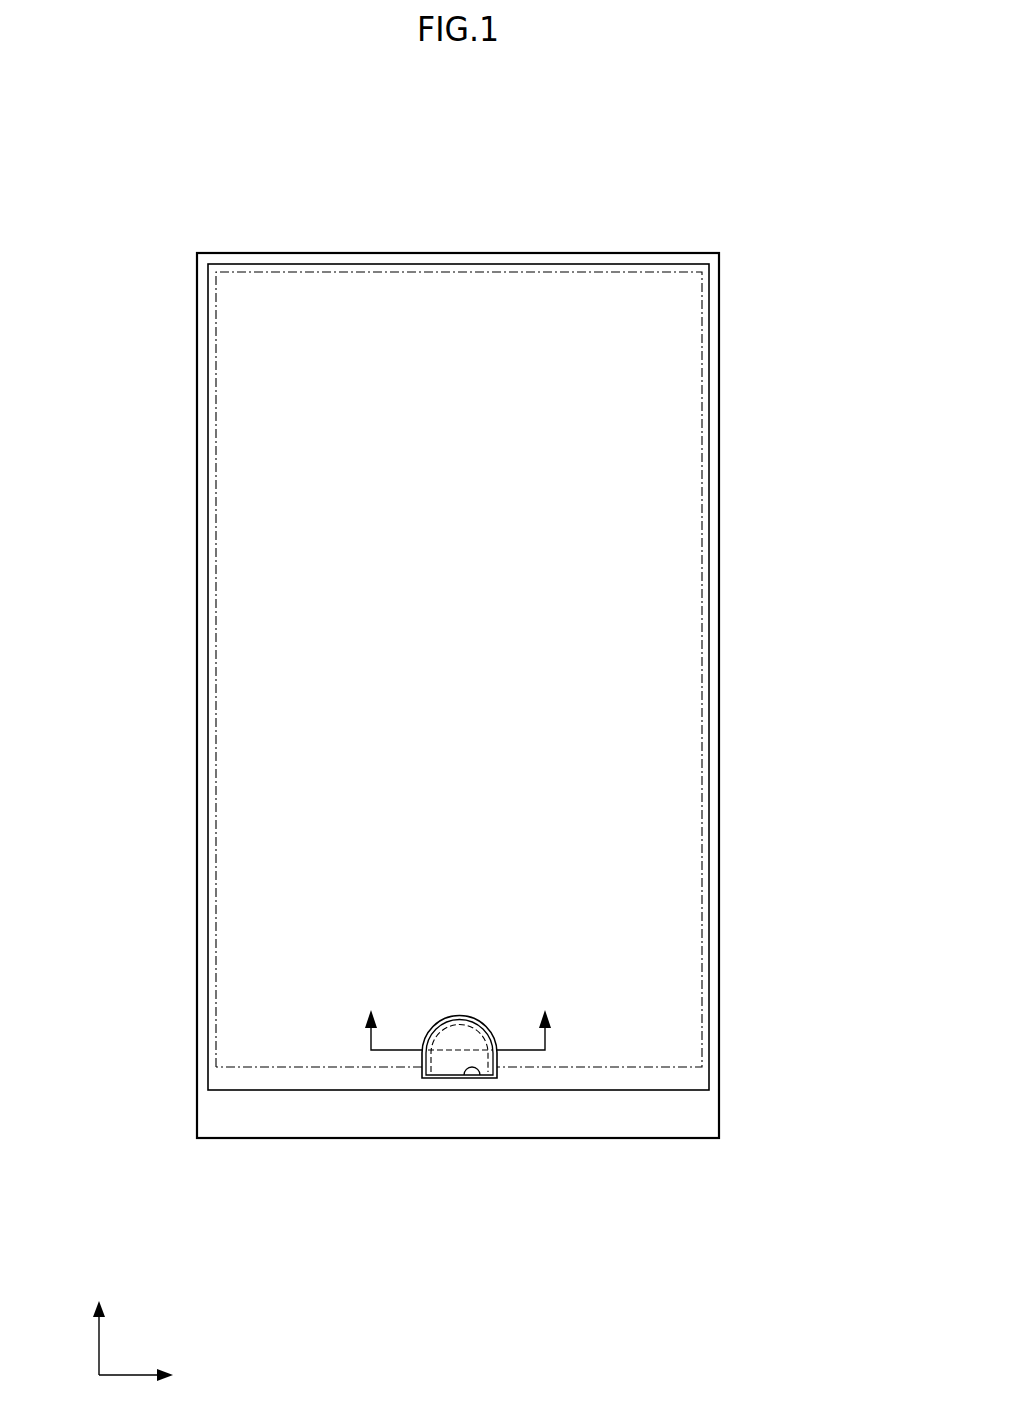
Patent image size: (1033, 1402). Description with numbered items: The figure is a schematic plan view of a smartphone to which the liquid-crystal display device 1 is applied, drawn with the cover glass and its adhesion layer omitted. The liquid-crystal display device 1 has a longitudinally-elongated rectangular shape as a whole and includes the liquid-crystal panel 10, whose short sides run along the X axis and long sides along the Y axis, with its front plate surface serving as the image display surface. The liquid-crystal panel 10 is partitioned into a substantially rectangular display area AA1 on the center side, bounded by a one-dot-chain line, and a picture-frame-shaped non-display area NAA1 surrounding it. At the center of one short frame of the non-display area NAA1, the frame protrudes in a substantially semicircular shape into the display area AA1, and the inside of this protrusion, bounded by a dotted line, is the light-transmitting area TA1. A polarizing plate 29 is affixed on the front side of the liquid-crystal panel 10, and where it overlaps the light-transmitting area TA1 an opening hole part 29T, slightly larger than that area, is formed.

The liquid-crystal display device 1 is at (663, 196).
The liquid-crystal panel 10 is at (218, 1114).
The display area AA1 is at (637, 1024).
The non-display area NAA1 is at (652, 1084).
The polarizing plate 29 is at (552, 1085).
The opening hole part 29T is at (479, 1072).
The light-transmitting area TA1 is at (452, 1062).